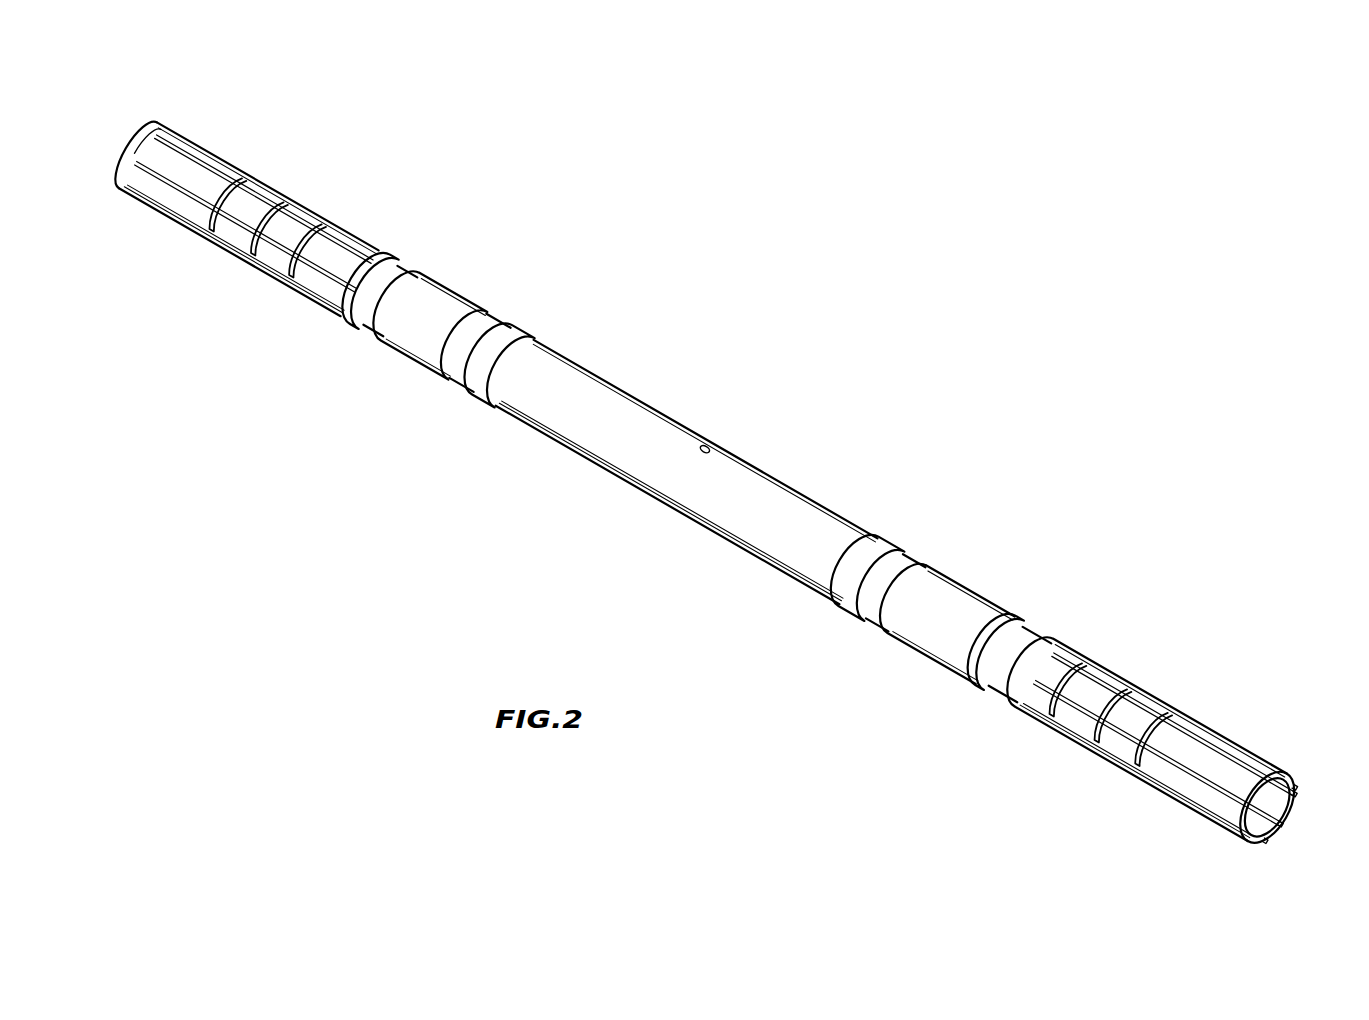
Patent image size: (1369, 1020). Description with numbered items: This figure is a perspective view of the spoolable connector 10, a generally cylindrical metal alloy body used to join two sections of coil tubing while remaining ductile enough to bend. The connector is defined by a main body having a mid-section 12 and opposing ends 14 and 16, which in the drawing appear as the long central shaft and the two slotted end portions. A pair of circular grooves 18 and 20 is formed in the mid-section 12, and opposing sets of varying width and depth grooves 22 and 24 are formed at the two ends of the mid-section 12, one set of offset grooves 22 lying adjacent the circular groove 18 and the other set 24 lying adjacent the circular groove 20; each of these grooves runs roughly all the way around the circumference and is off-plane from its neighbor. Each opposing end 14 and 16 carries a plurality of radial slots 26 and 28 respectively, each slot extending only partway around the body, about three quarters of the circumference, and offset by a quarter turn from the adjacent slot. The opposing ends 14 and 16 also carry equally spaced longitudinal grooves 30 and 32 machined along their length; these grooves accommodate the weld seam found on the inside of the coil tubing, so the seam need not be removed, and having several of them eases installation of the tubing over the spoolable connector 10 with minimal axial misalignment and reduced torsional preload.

The spoolable connector 10 is at (565, 490).
The mid-section 12 is at (818, 495).
The opposing end 14 is at (1183, 743).
The opposing end 16 is at (163, 158).
The circular groove 18 is at (1052, 608).
The circular groove 20 is at (430, 247).
The set of varying width and depth grooves 22 is at (956, 545).
The set of varying width and depth grooves 24 is at (549, 312).
The radial slots 26 is at (1170, 710).
The radial slots 28 is at (287, 200).
The longitudinal grooves 30 is at (1222, 790).
The longitudinal grooves 32 is at (123, 160).